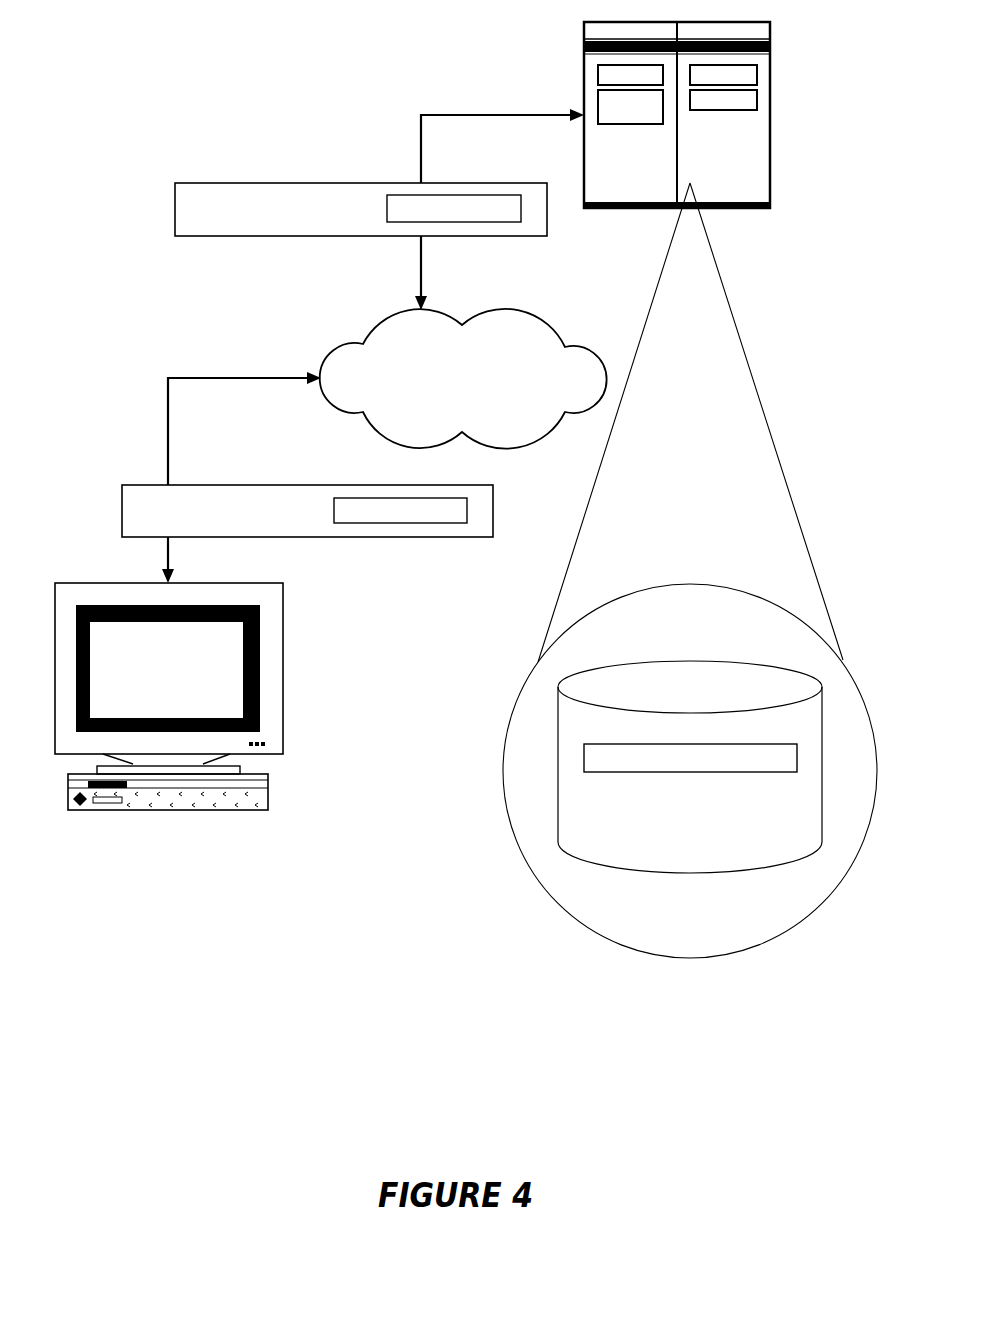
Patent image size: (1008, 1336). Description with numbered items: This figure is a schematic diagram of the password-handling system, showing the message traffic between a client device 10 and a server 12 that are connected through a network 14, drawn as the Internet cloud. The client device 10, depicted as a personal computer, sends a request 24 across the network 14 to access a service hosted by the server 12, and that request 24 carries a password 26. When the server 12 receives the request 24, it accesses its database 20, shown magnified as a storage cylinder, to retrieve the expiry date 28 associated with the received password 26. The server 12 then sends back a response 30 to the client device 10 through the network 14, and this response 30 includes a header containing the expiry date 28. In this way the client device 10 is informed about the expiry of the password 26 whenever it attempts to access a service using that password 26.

The client device 10 is at (268, 790).
The server 12 is at (584, 76).
The network 14 is at (398, 335).
The database 20 is at (557, 787).
The request 24 is at (122, 484).
The password 26 is at (402, 523).
The expiry date 28 is at (520, 208).
The response 30 is at (260, 183).